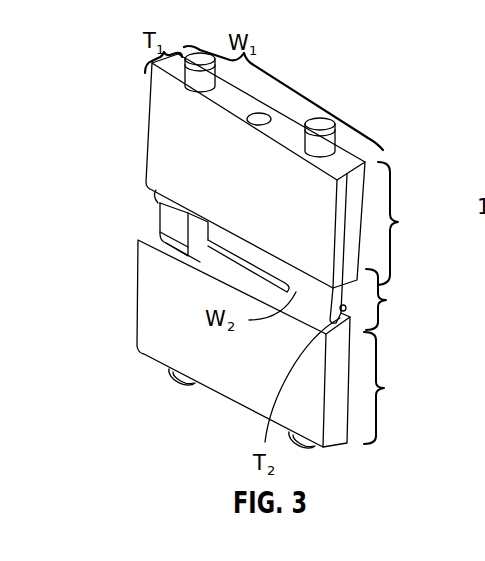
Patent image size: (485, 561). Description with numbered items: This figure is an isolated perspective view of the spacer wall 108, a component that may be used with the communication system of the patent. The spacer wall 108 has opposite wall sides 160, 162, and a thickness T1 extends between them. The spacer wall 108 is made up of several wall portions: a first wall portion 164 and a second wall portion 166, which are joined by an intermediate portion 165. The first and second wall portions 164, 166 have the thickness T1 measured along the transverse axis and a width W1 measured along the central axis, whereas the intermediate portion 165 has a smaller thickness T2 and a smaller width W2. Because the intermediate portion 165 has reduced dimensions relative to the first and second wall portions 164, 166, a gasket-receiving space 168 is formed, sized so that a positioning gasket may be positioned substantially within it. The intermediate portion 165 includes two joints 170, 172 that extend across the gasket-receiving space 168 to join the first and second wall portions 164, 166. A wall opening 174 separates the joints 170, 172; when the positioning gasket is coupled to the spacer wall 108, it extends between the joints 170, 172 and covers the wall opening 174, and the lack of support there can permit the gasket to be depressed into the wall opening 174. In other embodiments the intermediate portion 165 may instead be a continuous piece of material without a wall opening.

The spacer wall 108 is at (336, 95).
The wall side 160 is at (141, 152).
The wall side 162 is at (273, 103).
The first wall portion 164 is at (409, 223).
The intermediate portion 165 is at (397, 299).
The second wall portion 166 is at (398, 388).
The gasket-receiving space 168 is at (142, 207).
The joint 170 is at (172, 230).
The joint 172 is at (322, 297).
The wall opening 174 is at (212, 258).